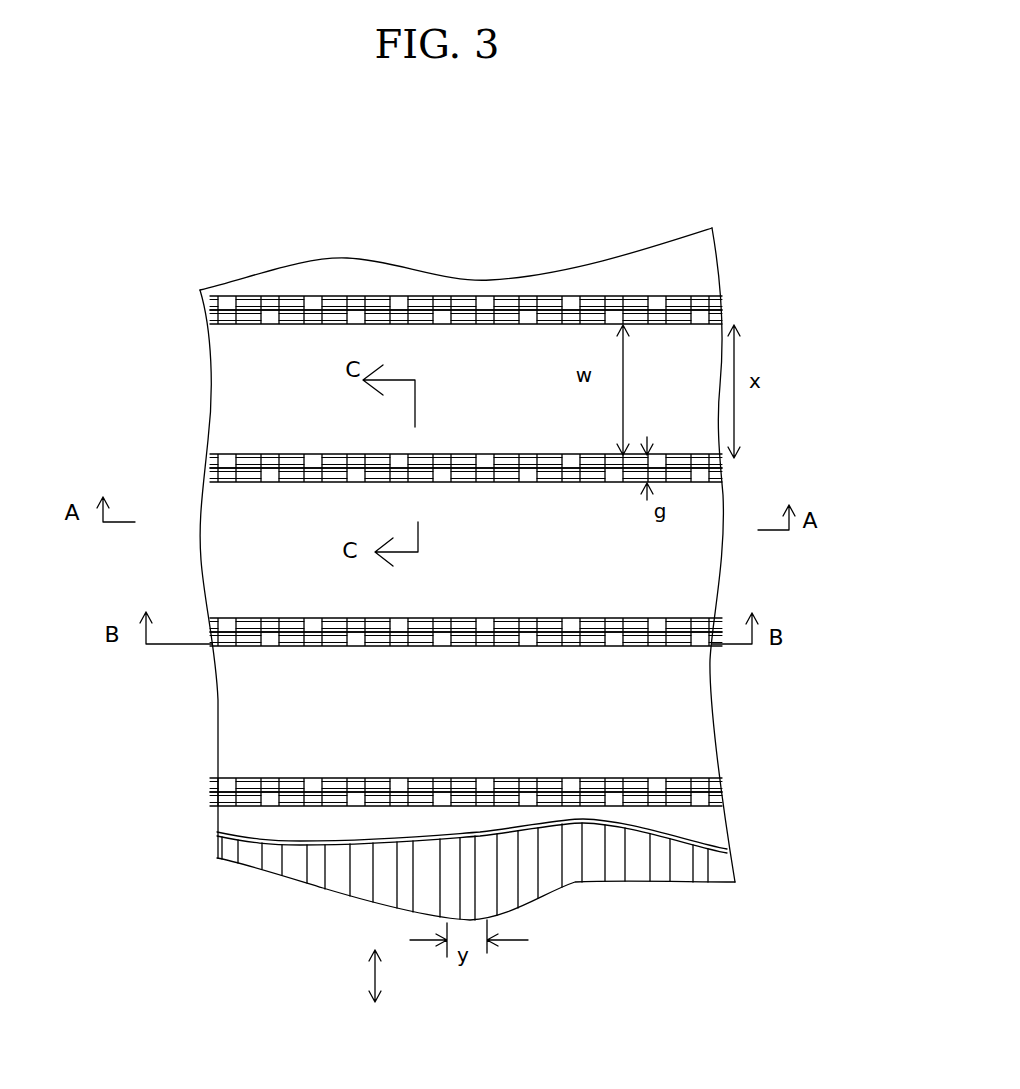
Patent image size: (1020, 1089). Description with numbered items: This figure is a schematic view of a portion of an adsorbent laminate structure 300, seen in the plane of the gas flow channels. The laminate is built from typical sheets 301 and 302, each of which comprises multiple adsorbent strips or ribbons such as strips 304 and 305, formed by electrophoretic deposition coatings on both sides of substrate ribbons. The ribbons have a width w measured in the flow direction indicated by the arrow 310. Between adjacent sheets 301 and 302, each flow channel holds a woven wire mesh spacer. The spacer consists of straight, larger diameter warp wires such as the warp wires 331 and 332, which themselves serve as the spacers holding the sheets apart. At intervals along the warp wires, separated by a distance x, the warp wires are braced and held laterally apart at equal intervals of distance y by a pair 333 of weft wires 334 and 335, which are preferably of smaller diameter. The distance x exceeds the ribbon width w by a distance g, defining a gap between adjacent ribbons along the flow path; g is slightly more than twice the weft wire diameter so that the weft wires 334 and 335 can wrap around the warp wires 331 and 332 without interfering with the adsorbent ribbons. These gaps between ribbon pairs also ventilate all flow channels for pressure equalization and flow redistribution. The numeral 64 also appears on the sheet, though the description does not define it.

The adsorbent laminate structure 300 is at (373, 223).
The sheet 301 is at (300, 842).
The sheet 302 is at (338, 902).
The adsorbent strip 304 is at (347, 698).
The adsorbent strip 305 is at (317, 541).
The arrow 310 is at (400, 976).
The warp wire 331 is at (580, 857).
The warp wire 332 is at (613, 858).
The pair of weft wires 333 is at (740, 790).
The weft wire 334 is at (276, 790).
The weft wire 335 is at (294, 800).
The fabric 64 is at (507, 573).